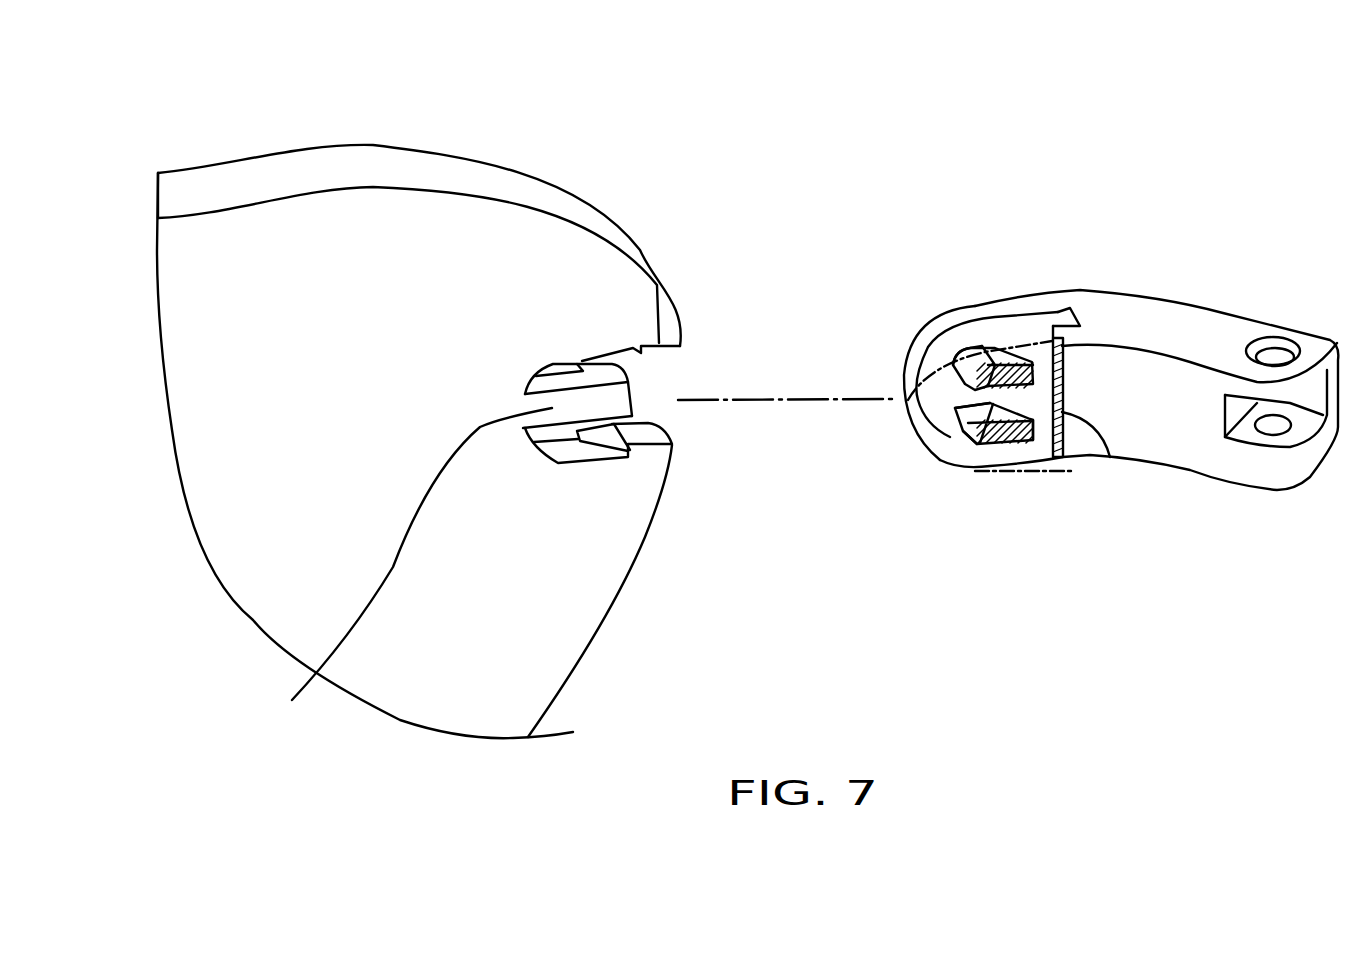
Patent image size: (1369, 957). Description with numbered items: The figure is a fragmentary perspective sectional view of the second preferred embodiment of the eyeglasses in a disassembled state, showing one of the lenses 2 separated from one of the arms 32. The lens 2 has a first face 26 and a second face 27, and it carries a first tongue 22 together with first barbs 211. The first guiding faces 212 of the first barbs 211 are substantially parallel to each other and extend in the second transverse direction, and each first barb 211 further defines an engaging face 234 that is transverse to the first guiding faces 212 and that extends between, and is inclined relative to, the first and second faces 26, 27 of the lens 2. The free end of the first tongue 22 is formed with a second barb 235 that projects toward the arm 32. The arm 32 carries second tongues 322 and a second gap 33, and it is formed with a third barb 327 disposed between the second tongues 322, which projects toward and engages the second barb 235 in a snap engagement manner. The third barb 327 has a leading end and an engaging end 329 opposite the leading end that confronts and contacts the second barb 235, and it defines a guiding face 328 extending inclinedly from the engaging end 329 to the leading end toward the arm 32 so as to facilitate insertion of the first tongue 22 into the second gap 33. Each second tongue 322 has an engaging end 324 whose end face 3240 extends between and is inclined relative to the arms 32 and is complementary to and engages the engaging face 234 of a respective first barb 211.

The lens 2 is at (456, 743).
The second face 27 is at (417, 146).
The first tongue 22 is at (394, 568).
The first face 26 is at (567, 640).
The second barb 235 is at (570, 362).
The first barb 211 is at (658, 290).
The engaging face 234 is at (613, 447).
The first guiding face 212 is at (637, 427).
The arm 32 is at (1050, 298).
The second gap 33 is at (1068, 338).
The end face 3240 is at (1063, 457).
The second tongue 322 is at (1000, 348).
The third barb 327 is at (958, 352).
The guiding face 328 is at (955, 408).
The engaging end 329 is at (980, 444).
The engaging end 324 is at (1037, 421).